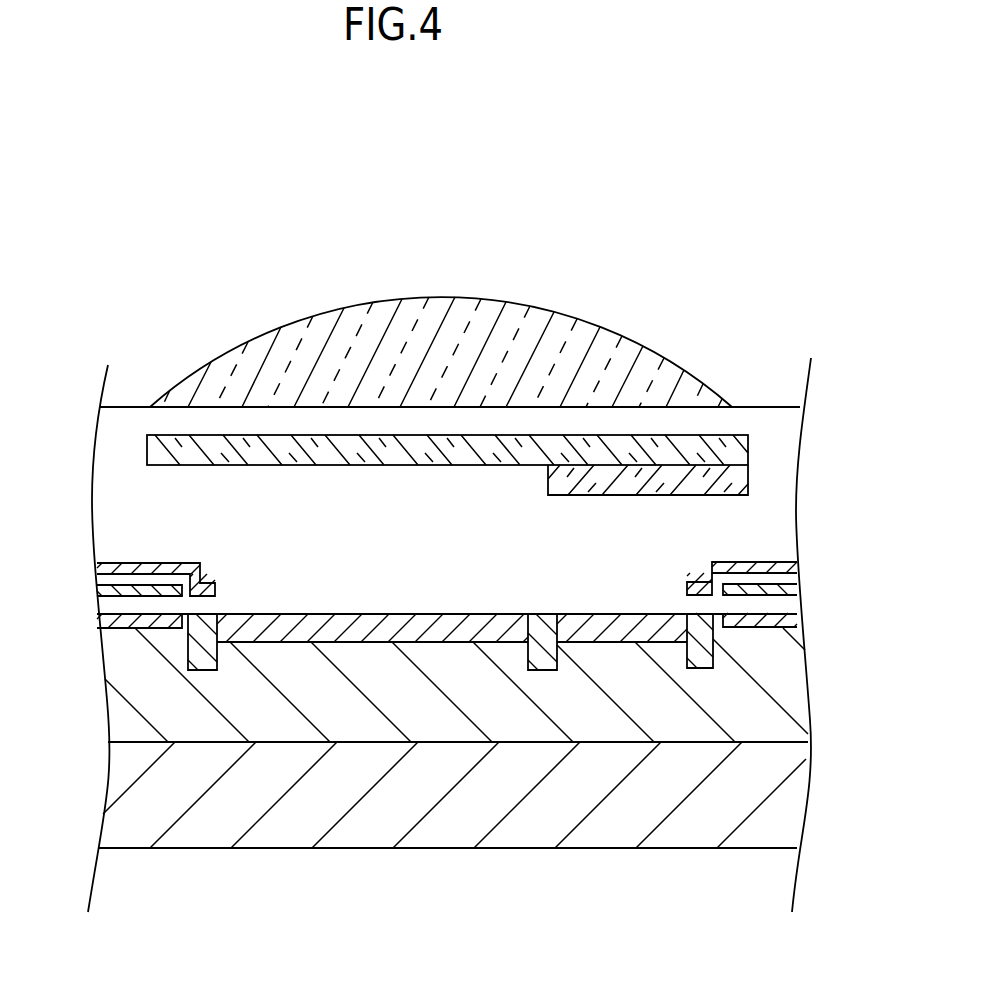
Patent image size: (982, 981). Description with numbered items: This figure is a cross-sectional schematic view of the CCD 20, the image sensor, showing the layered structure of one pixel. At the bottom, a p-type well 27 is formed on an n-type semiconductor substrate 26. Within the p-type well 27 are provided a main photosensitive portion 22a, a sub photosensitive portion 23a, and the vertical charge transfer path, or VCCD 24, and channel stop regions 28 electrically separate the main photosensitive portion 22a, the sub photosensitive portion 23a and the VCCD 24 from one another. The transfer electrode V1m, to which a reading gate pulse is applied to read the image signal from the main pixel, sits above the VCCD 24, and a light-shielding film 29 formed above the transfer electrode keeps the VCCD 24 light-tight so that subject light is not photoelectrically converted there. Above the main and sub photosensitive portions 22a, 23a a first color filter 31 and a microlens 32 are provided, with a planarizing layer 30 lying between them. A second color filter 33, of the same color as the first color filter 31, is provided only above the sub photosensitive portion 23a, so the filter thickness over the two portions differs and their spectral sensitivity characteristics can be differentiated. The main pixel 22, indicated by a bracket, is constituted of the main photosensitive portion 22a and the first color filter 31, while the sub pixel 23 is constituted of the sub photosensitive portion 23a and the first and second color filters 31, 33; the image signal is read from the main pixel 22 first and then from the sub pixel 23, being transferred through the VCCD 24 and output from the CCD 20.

The CCD 20 is at (522, 272).
The planarizing layer 30 is at (163, 515).
The microlens 32 is at (620, 338).
The first color filter 31 is at (243, 466).
The second color filter 33 is at (555, 495).
The light-shielding film 29 is at (97, 568).
The transfer electrode V1m is at (97, 592).
The vertical charge transfer path (VCCD) 24 is at (97, 624).
The main photosensitive portion 22a is at (348, 614).
The sub photosensitive portion 23a is at (611, 615).
The channel stop region 28 is at (215, 664).
The p-type well 27 is at (788, 694).
The n-type semiconductor substrate 26 is at (787, 797).
The main pixel 22 is at (208, 862).
The sub pixel 23 is at (548, 860).